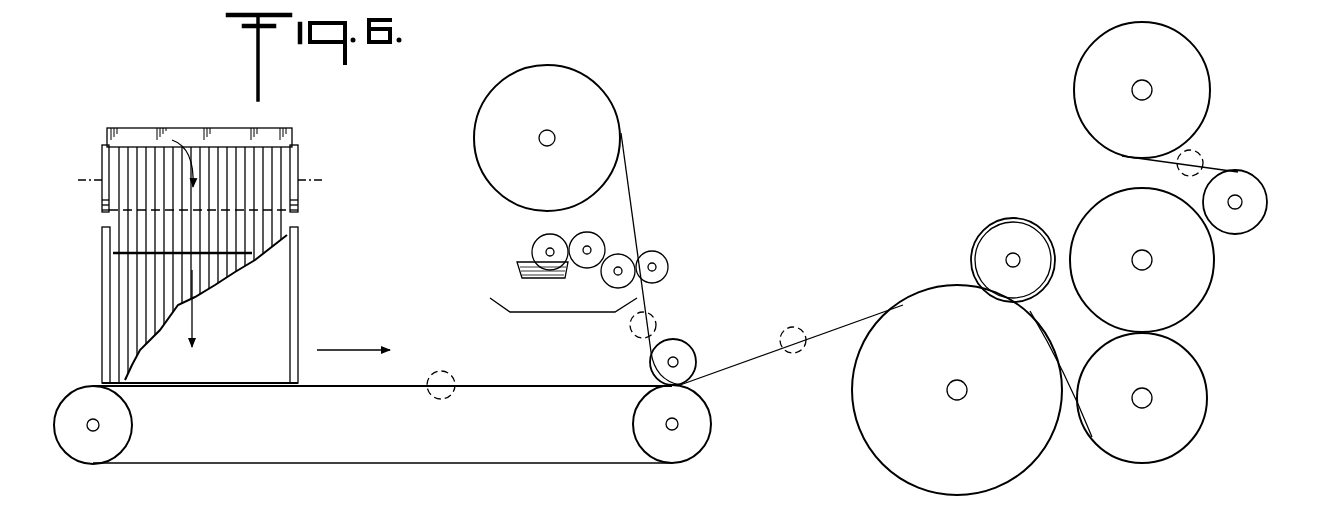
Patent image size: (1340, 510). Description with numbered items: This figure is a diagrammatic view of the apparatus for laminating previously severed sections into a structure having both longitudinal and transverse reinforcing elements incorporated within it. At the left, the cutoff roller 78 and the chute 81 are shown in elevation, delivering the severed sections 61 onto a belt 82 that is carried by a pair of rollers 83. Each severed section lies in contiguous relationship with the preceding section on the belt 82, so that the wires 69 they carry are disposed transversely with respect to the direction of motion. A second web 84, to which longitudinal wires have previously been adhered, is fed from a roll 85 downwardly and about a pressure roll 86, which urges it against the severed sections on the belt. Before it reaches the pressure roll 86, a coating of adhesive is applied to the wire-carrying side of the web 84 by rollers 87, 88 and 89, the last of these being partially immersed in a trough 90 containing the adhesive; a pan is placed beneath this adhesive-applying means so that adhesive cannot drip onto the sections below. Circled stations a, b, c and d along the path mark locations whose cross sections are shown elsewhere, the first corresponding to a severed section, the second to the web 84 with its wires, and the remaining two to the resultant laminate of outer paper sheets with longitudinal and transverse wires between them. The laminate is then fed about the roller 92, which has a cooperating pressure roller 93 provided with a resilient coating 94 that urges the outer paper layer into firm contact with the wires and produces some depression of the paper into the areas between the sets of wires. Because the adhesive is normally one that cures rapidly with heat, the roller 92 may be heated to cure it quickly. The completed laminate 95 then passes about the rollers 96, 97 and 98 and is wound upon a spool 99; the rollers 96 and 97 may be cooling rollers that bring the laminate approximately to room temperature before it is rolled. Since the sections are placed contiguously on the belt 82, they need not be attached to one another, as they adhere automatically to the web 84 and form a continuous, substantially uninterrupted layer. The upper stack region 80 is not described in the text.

The stack of sheets 61 is at (133, 313).
The wires 69 is at (133, 214).
The cutoff roller 78 is at (298, 160).
The hopper top plate 80 is at (185, 130).
The chute 81 is at (302, 255).
The belt 82 is at (412, 388).
The roller 83 is at (118, 430).
The second web 84 is at (628, 182).
The roll 85 is at (548, 72).
The pressure roll 86 is at (692, 342).
The roller 87 is at (622, 253).
The roller 88 is at (593, 236).
The roller 89 is at (542, 235).
The trough 90 is at (518, 270).
The roller 92 is at (865, 385).
The pressure roller 93 is at (998, 235).
The resilient coating 94 is at (1028, 218).
The completed laminate 95 is at (1067, 377).
The roller 96 is at (1195, 378).
The roller 97 is at (1202, 272).
The roller 98 is at (1257, 203).
The spool 99 is at (1190, 63).
The station a is at (443, 372).
The station b is at (655, 318).
The station c is at (788, 323).
The station d is at (1200, 153).